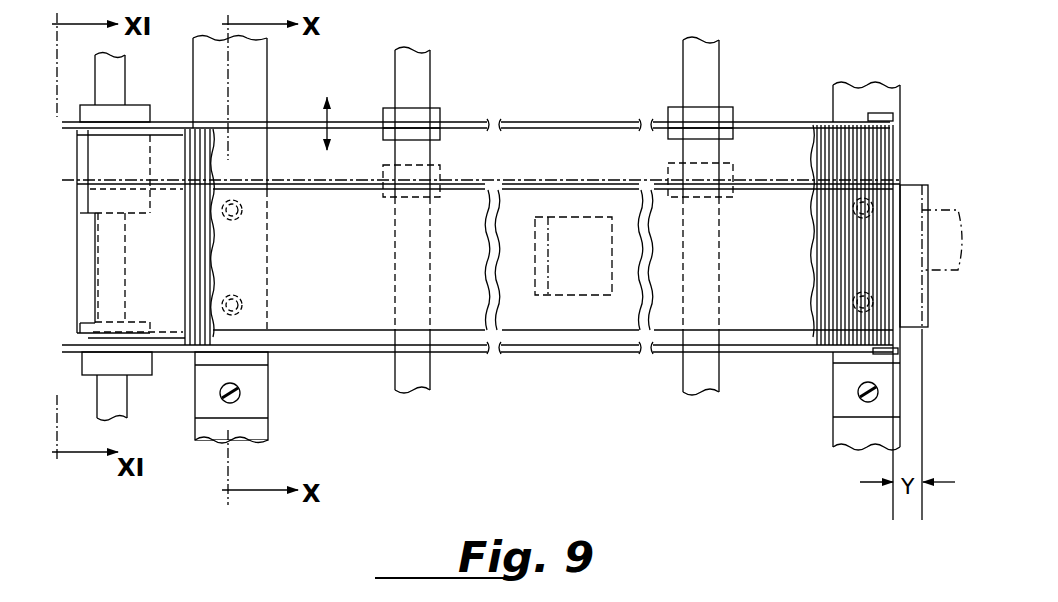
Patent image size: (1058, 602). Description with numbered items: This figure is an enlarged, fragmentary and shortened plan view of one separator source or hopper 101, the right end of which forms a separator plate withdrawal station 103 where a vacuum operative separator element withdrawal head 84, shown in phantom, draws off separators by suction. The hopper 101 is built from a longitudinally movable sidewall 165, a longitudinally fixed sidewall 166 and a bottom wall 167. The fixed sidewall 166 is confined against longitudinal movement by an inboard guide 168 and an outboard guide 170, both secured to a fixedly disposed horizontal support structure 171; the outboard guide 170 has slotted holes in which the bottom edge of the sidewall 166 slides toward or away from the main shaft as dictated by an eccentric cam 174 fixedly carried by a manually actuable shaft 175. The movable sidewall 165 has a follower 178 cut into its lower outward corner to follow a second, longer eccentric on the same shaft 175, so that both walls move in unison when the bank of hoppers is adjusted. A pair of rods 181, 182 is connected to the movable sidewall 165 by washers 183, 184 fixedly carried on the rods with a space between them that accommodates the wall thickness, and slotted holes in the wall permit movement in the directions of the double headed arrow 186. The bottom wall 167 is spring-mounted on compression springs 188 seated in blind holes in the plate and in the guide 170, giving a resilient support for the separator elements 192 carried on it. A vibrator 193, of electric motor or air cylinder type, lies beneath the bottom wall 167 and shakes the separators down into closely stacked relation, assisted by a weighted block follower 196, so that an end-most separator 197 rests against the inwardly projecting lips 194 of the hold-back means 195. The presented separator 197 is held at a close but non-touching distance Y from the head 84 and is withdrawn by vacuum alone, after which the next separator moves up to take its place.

The vacuum operative battery separator element withdrawal head 84 is at (935, 205).
The separator source or hopper 101 is at (517, 95).
The separator plate withdrawal station 103 is at (890, 100).
The longitudinally movable sidewall 165 is at (557, 122).
The longitudinally fixed sidewall 166 is at (575, 345).
The bottom wall 167 is at (373, 302).
The inboard guide 168 is at (848, 355).
The outboard guide 170 is at (252, 358).
The support structure 171 is at (253, 88).
The cam or eccentric 174 is at (142, 363).
The shaft 175 is at (118, 400).
The follower 178 is at (133, 118).
The rod 181 is at (692, 385).
The rod 182 is at (425, 370).
The washer 183 is at (432, 115).
The washer 184 is at (440, 130).
The double headed arrow 186 is at (333, 112).
The compression spring 188 is at (240, 298).
The separator element 192 is at (832, 145).
The vibrator 193 is at (602, 215).
The inwardly projecting lip 194 is at (893, 128).
The hold-back means 195 is at (895, 118).
The weighted block follower 196 is at (88, 295).
The end-most separator 197 is at (893, 318).